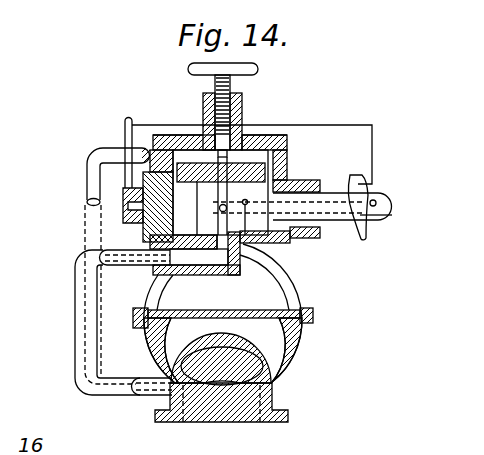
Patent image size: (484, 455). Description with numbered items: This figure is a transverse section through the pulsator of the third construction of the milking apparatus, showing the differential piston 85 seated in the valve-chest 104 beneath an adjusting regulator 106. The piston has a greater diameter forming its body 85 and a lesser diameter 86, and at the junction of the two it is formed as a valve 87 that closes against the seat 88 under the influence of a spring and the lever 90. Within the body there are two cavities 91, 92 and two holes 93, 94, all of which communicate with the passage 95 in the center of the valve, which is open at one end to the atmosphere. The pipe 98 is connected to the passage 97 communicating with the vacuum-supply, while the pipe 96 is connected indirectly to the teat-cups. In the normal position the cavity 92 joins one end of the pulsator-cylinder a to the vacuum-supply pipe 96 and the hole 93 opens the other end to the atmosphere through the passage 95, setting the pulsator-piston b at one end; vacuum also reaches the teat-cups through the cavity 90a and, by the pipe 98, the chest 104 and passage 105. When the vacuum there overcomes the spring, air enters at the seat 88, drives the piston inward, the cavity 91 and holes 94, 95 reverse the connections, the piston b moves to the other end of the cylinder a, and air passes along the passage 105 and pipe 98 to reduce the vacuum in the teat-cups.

The regulator 106 is at (258, 69).
The passage 105 is at (258, 155).
The hole 94 is at (246, 201).
The passage 95 is at (328, 190).
The seat 88 is at (281, 181).
The differential piston 85 is at (195, 221).
The hole 93 is at (170, 196).
The pipe 98 is at (93, 180).
The valve-chest 104 is at (188, 198).
The valve 87 is at (287, 240).
The lesser diameter of piston 86 is at (330, 217).
The cavity 91 is at (290, 280).
The pulsator-cylinder a is at (313, 311).
The cavity 92 is at (224, 240).
The pulsator-piston b is at (250, 330).
The lever 90 is at (228, 366).
The cavity 90a is at (272, 366).
The passage 97 is at (197, 425).
The pipe 96 is at (75, 312).